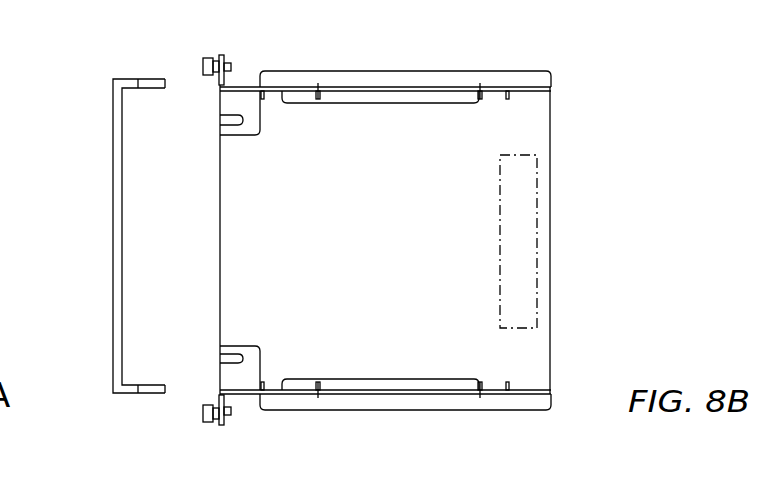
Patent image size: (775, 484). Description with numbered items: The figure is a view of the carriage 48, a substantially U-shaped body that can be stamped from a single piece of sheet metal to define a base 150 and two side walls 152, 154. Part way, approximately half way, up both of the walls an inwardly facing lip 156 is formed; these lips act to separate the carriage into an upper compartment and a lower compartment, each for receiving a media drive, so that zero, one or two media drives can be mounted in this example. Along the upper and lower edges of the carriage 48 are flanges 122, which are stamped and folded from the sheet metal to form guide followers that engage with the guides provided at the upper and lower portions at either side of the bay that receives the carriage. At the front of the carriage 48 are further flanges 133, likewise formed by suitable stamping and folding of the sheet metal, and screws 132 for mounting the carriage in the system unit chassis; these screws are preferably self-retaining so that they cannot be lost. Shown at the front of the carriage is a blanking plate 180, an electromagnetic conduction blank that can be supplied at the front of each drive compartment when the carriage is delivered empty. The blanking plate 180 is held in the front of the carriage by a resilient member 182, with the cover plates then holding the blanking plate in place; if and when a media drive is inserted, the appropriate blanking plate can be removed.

The carriage 48 is at (426, 247).
The flanges 122 is at (385, 78).
The screws 132 is at (203, 65).
The flanges 133 is at (226, 61).
The base 150 is at (540, 133).
The side wall 152 is at (527, 90).
The side wall 154 is at (525, 395).
The inwardly facing lip 156 is at (385, 100).
The blanking plate 180 is at (124, 236).
The resilient member 182 is at (148, 89).